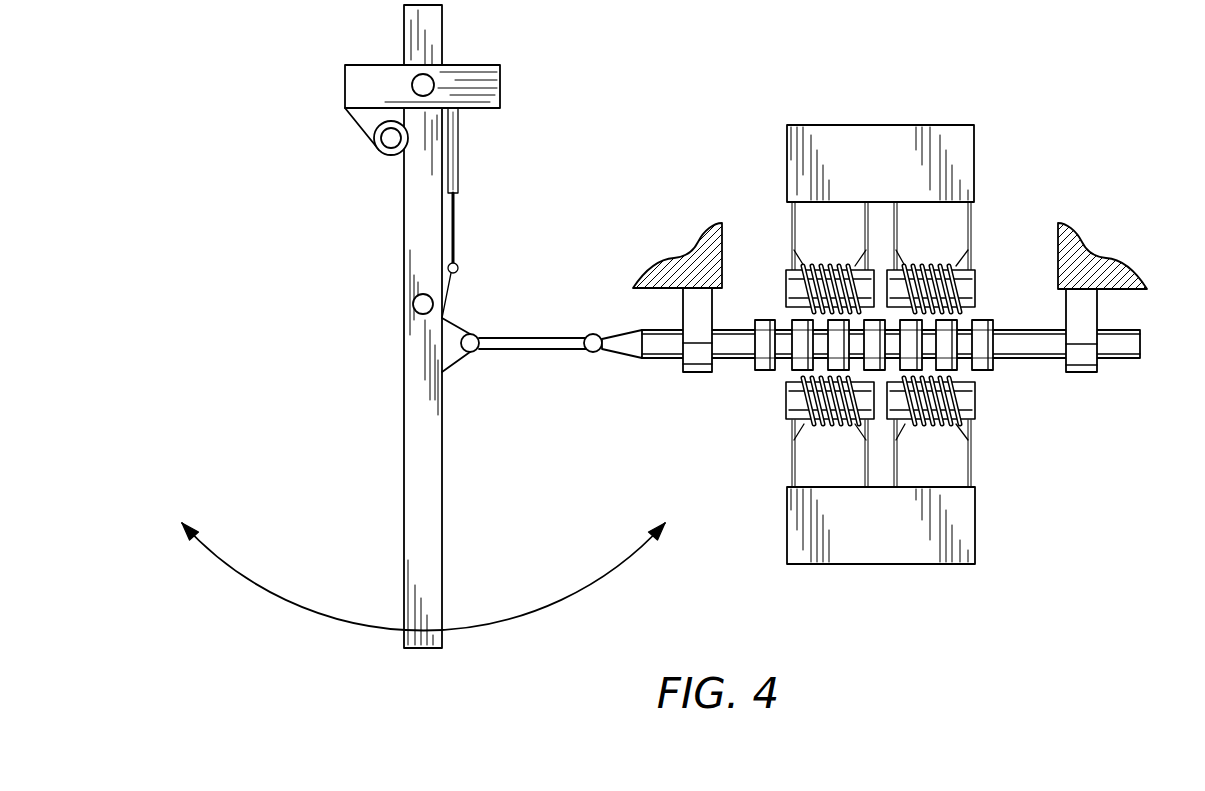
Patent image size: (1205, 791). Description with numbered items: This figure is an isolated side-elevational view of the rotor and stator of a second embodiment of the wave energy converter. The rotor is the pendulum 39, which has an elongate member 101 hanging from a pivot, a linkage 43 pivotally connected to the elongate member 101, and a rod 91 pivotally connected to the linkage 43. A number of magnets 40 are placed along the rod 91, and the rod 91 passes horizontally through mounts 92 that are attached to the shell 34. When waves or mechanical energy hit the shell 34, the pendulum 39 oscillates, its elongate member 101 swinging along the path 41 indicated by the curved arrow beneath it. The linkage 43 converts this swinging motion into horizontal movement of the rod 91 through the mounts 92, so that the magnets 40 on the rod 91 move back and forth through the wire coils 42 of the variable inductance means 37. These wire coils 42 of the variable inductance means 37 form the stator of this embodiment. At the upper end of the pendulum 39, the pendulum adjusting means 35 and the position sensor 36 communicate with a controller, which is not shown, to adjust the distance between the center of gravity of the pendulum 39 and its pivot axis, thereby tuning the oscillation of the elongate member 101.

The shell 34 is at (716, 224).
The pendulum adjusting means 35 is at (378, 163).
The position sensor 36 is at (456, 142).
The variable inductance means 37 is at (833, 125).
The pendulum 39 is at (404, 419).
The magnets 40 is at (765, 372).
The path 41 is at (583, 585).
The wire coils 42 is at (804, 266).
The linkage 43 is at (553, 337).
The rod 91 is at (1132, 341).
The mounts 92 is at (697, 372).
The elongate member 101 is at (412, 348).